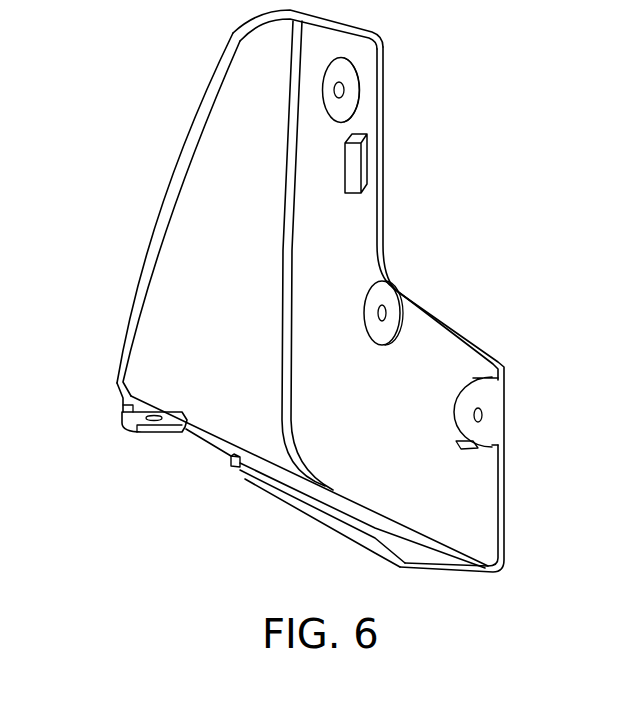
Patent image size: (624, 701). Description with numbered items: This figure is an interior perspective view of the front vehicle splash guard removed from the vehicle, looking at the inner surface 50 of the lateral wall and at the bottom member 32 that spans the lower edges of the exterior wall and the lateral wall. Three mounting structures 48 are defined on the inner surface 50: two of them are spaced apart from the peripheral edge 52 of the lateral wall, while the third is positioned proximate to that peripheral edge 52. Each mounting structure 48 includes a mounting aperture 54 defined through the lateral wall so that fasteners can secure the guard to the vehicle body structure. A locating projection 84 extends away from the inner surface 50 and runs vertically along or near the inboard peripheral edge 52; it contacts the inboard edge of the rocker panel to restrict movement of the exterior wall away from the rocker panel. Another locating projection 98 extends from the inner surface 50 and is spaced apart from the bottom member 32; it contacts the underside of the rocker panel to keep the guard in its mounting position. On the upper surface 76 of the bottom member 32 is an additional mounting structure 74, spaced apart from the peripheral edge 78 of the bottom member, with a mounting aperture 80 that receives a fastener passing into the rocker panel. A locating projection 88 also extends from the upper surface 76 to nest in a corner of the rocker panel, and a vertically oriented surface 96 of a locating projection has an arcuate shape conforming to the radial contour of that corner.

The bottom member 32 is at (280, 492).
The mounting structure 48 is at (344, 73).
The inner surface 50 is at (343, 227).
The peripheral edge 52 is at (461, 337).
The mounting aperture 54 is at (345, 92).
The additional mounting structure 74 is at (155, 433).
The upper surface 76 is at (187, 416).
The peripheral edge 78 is at (236, 470).
The mounting aperture 80 is at (157, 414).
The locating projection 84 is at (358, 160).
The locating projection 88 is at (112, 410).
The vertically oriented surface 96 is at (120, 405).
The locating projection 98 is at (477, 449).